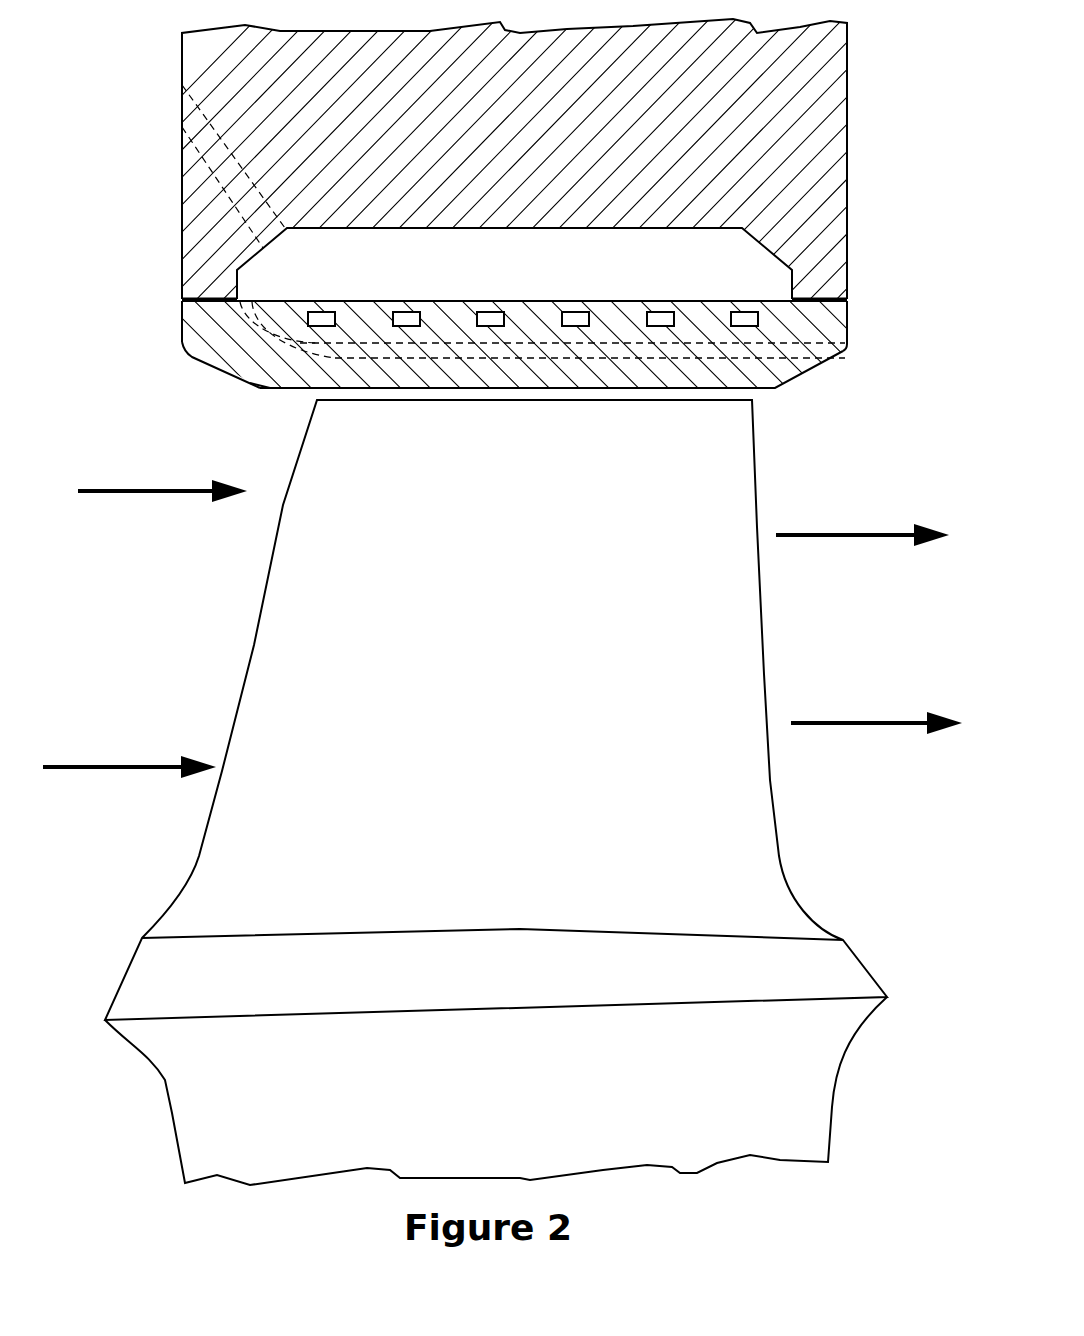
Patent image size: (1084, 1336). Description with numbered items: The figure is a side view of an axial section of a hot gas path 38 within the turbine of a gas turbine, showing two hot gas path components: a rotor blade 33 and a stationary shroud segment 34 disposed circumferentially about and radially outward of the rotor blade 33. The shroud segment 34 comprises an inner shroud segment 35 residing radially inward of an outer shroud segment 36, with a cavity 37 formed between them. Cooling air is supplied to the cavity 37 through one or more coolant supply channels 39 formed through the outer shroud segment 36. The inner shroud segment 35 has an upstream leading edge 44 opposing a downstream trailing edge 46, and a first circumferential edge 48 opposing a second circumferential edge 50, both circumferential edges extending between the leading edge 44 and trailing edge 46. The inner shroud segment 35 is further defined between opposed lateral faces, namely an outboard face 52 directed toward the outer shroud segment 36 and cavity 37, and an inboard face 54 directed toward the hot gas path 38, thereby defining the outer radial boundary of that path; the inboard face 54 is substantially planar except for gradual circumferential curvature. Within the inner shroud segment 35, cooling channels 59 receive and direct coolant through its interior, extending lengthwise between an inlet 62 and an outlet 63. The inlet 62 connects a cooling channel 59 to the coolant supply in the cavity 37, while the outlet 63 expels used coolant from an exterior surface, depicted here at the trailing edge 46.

The rotor blade 33 is at (504, 809).
The stationary shroud segment 34 is at (116, 326).
The inner shroud segment 35 is at (772, 373).
The outer shroud segment 36 is at (862, 154).
The cavity 37 is at (494, 271).
The hot gas path 38 is at (132, 568).
The coolant supply channel 39 is at (237, 183).
The leading edge 44 is at (182, 322).
The trailing edge 46 is at (850, 318).
The first circumferential edge 48 is at (240, 353).
The second circumferential edge 50 is at (868, 330).
The outboard face 52 is at (368, 300).
The inboard face 54 is at (278, 391).
The cooling channel 59 is at (408, 313).
The inlet 62 is at (250, 300).
The outlet 63 is at (847, 357).